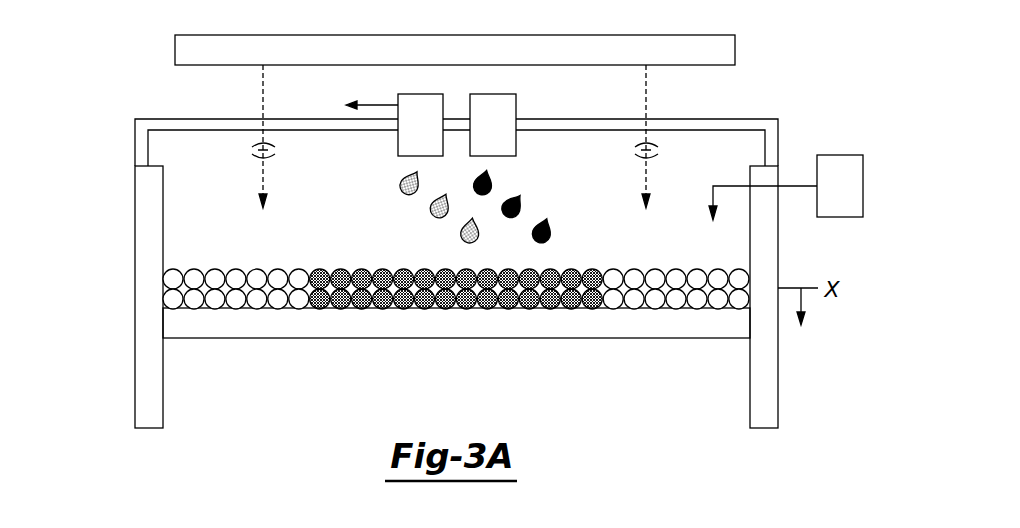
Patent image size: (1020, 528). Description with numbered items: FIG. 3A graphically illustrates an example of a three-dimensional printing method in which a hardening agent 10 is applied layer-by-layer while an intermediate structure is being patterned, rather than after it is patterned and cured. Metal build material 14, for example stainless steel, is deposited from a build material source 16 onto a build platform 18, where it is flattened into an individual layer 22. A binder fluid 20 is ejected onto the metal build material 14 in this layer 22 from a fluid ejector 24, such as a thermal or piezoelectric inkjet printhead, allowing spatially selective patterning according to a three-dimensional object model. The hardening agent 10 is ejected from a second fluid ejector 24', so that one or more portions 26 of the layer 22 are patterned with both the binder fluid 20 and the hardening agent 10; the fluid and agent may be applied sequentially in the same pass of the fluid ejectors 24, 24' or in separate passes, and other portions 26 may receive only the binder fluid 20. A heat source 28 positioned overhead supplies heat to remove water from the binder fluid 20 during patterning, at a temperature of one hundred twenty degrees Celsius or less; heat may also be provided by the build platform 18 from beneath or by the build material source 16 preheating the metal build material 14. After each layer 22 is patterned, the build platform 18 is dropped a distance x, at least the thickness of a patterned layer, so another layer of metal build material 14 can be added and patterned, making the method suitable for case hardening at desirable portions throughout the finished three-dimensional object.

The hardening agent 10 is at (521, 201).
The metal build material 14 is at (257, 300).
The build material source 16 is at (851, 196).
The build platform 18 is at (663, 322).
The binder fluid 20 is at (401, 181).
The layer of metal build material 22 is at (398, 328).
The fluid ejector 24 is at (394, 125).
The fluid ejector 24' is at (493, 125).
The patterned portion 26 is at (607, 313).
The heat source 28 is at (722, 50).